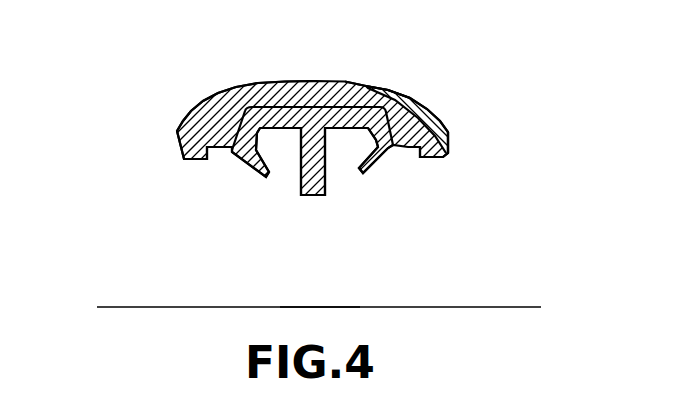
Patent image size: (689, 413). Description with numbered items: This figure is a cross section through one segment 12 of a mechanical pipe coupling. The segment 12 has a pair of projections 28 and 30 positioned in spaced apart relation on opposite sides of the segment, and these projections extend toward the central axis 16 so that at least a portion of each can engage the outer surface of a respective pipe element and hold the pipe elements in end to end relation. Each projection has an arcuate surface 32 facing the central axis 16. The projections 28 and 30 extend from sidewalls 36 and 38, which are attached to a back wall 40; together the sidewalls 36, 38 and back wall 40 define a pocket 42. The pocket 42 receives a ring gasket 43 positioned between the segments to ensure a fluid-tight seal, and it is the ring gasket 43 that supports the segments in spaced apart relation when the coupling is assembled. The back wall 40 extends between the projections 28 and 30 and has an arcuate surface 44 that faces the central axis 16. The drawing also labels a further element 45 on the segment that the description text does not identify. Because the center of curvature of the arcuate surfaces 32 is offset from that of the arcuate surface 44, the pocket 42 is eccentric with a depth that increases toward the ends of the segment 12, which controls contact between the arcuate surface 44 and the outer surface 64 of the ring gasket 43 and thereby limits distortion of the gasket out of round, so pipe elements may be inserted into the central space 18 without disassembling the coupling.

The segment 12 is at (408, 89).
The central axis 16 is at (270, 306).
The central space 18 is at (333, 291).
The projection 28 is at (178, 150).
The projection 30 is at (443, 157).
The arcuate surface 32 is at (197, 160).
The sidewall 36 is at (191, 119).
The sidewall 38 is at (434, 122).
The back wall 40 is at (273, 82).
The pocket 42 is at (308, 95).
The ring gasket 43 is at (398, 152).
The arcuate surface 44 is at (347, 100).
The center post 45 is at (310, 196).
The outer surface 64 is at (362, 85).